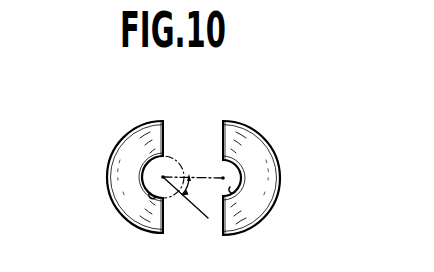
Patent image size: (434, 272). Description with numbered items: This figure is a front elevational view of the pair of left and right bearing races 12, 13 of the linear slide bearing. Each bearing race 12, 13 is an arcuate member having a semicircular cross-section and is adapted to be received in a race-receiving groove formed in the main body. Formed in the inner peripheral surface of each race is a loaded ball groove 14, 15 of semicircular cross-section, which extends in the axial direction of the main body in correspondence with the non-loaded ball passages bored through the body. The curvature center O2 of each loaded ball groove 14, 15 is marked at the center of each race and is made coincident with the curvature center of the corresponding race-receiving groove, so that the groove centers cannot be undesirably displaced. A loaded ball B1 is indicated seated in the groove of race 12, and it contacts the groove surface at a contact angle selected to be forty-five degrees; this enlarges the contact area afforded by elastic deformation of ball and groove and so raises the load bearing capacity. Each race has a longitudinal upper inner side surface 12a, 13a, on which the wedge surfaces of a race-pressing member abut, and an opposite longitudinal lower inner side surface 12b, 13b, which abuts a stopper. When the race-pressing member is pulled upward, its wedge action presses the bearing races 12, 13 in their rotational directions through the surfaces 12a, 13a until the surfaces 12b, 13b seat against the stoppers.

The bearing race 12 is at (106, 149).
The longitudinal upper inner side surface 12a is at (164, 121).
The longitudinal lower inner side surface 12b is at (164, 233).
The bearing race 13 is at (279, 141).
The longitudinal upper inner side surface 13a is at (223, 121).
The longitudinal lower inner side surface 13b is at (222, 234).
The loaded ball groove 14 is at (163, 177).
The loaded ball groove 15 is at (236, 191).
The curvature center of loaded ball groove O2 is at (259, 114).
The loaded ball B1 is at (172, 157).